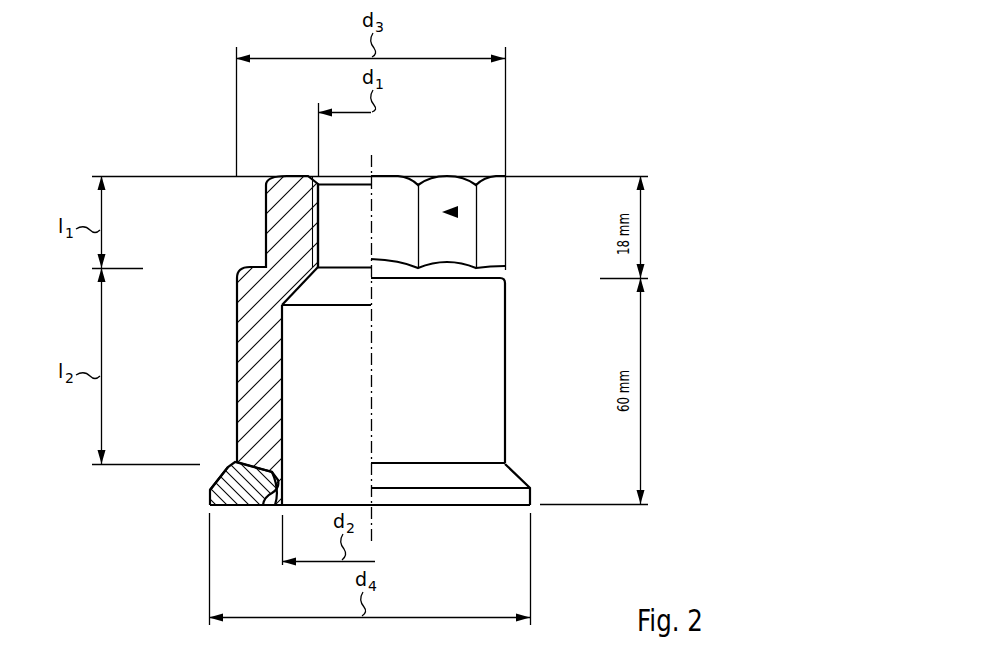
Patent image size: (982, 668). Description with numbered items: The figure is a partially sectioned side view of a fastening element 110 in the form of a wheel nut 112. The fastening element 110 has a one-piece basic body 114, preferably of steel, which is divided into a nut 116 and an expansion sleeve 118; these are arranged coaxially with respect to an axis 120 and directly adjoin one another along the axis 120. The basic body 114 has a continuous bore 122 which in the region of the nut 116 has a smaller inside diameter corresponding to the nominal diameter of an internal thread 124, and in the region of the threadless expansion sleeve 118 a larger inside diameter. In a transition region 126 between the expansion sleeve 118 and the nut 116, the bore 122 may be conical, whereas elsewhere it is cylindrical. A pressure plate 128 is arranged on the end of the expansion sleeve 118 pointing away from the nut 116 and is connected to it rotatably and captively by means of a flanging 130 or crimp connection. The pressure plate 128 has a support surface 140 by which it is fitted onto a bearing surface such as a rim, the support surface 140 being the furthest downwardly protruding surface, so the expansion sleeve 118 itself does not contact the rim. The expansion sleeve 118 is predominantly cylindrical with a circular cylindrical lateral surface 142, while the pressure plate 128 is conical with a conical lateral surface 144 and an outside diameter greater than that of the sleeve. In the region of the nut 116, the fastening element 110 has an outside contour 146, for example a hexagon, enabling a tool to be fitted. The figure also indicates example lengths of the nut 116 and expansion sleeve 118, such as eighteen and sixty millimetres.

The fastening element 110 is at (357, 309).
The wheel nut 112 is at (357, 309).
The basic body 114 is at (463, 250).
The nut 116 is at (463, 237).
The expansion sleeve 118 is at (335, 345).
The axis 120 is at (372, 155).
The bore 122 is at (338, 413).
The internal thread 124 is at (318, 228).
The transition region 126 is at (297, 287).
The pressure plate 128 is at (490, 483).
The flanging 130 is at (283, 488).
The support surface 140 is at (260, 500).
The circular cylindrical lateral surface 142 is at (237, 352).
The conical lateral surface 144 is at (222, 478).
The outside contour 146 is at (457, 208).